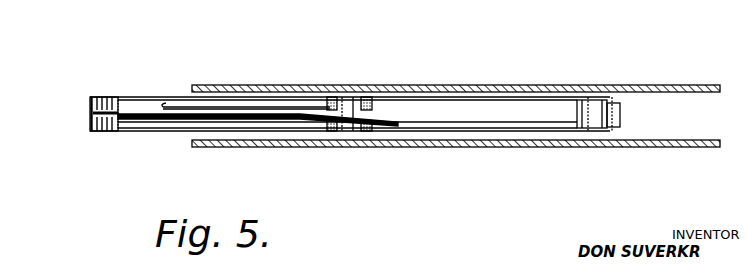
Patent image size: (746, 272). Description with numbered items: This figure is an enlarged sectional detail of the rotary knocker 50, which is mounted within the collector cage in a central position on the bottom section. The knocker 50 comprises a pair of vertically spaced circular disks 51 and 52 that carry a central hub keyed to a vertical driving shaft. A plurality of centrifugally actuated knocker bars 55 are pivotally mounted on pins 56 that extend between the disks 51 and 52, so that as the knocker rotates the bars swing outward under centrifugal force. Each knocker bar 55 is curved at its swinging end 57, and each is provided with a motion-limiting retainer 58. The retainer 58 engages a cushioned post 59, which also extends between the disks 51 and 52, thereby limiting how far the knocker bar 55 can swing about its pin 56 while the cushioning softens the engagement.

The rotary knocker 50 is at (456, 112).
The circular disk 51 is at (467, 90).
The circular disk 52 is at (470, 148).
The knocker bar 55 is at (223, 102).
The pin 56 is at (600, 121).
The swinging end 57 is at (90, 120).
The motion-limiting retainer 58 is at (287, 112).
The cushioned post 59 is at (364, 96).